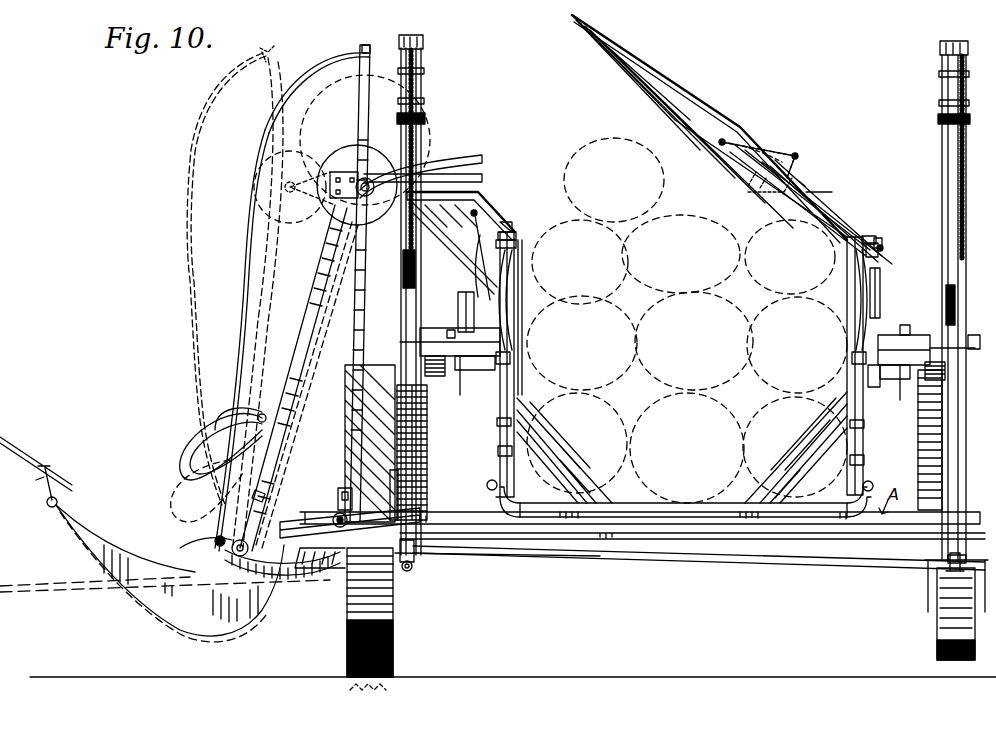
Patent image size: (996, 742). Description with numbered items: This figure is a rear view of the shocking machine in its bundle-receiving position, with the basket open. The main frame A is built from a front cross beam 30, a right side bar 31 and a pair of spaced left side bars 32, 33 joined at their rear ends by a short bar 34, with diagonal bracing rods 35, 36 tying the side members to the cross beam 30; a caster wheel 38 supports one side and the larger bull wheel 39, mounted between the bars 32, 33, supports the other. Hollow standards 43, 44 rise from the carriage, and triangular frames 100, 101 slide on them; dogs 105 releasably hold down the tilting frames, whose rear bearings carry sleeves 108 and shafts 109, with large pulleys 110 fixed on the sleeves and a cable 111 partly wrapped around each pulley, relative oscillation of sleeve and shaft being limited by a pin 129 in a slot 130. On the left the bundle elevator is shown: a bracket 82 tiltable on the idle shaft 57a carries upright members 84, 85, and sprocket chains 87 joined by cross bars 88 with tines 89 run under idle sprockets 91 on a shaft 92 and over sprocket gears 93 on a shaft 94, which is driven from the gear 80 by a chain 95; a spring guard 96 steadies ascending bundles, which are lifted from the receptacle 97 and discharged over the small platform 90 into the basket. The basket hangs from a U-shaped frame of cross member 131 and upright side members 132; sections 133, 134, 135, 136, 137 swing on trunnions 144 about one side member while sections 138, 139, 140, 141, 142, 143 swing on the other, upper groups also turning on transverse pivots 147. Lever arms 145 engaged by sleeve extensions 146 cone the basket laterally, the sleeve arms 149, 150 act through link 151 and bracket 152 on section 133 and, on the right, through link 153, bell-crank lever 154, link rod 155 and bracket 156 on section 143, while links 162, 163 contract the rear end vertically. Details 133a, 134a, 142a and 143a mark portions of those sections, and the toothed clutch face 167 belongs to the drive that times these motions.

The front cross beam 30 is at (462, 512).
The right side bar 31 is at (948, 540).
The left side bar 32 is at (418, 548).
The left side bar 33 is at (288, 530).
The short bar 34 is at (303, 570).
The bracing rod 35 is at (788, 556).
The bracing rod 36 is at (563, 555).
The caster wheel 38 is at (935, 657).
The bull wheel 39 is at (394, 642).
The hollow standard 43 is at (966, 232).
The hollow standard 44 is at (419, 179).
The idle shaft 57a is at (326, 578).
The gear 80 is at (352, 443).
The bracket 82 is at (296, 562).
The upright member 84 is at (347, 342).
The upright member 85 is at (268, 418).
The sprocket chain 87 is at (278, 322).
The cross bar 88 is at (261, 276).
The tine 89 is at (268, 490).
The small platform 90 is at (450, 162).
The idle sprocket 91 is at (235, 572).
The shaft 92 is at (225, 560).
The sprocket gear 93 is at (336, 228).
The shaft 94 is at (365, 150).
The chain 95 is at (330, 305).
The spring guard 96 is at (242, 285).
The receptacle 97 is at (165, 614).
The triangular frame 100 is at (933, 426).
The triangular frame 101 is at (430, 434).
The dog 105 is at (420, 500).
The sleeve 108 is at (438, 328).
The shaft 109 is at (976, 335).
The large pulley 110 is at (418, 292).
The cable 111 is at (415, 146).
The pin 129 is at (456, 334).
The slot 130 is at (460, 380).
The cross member 131 is at (716, 540).
The upright side member 132 is at (497, 452).
The basket section 133 is at (486, 196).
The plate flange 133a is at (520, 244).
The basket section 134 is at (516, 292).
The wall flange 134a is at (510, 224).
The basket section 135 is at (515, 386).
The basket section 136 is at (560, 452).
The basket section 137 is at (660, 504).
The basket section 138 is at (720, 502).
The basket section 139 is at (790, 470).
The basket section 140 is at (872, 418).
The basket section 141 is at (846, 378).
The basket section 142 is at (805, 243).
The hopper plate 142a is at (818, 184).
The basket section 143 is at (700, 130).
The hopper plate 143a is at (835, 202).
The trunnion 144 is at (487, 486).
The lever arm 145 is at (470, 372).
The extension 146 is at (434, 378).
The transverse pivot 147 is at (870, 240).
The arm 149 is at (462, 300).
The arm 150 is at (512, 358).
The link 151 is at (478, 272).
The bracket 152 is at (478, 236).
The link 153 is at (895, 249).
The bell-crank lever 154 is at (883, 248).
The link rod 155 is at (852, 216).
The bracket 156 is at (775, 154).
The link 162 is at (508, 302).
The link 163 is at (500, 424).
The toothed clutch face 167 is at (424, 119).